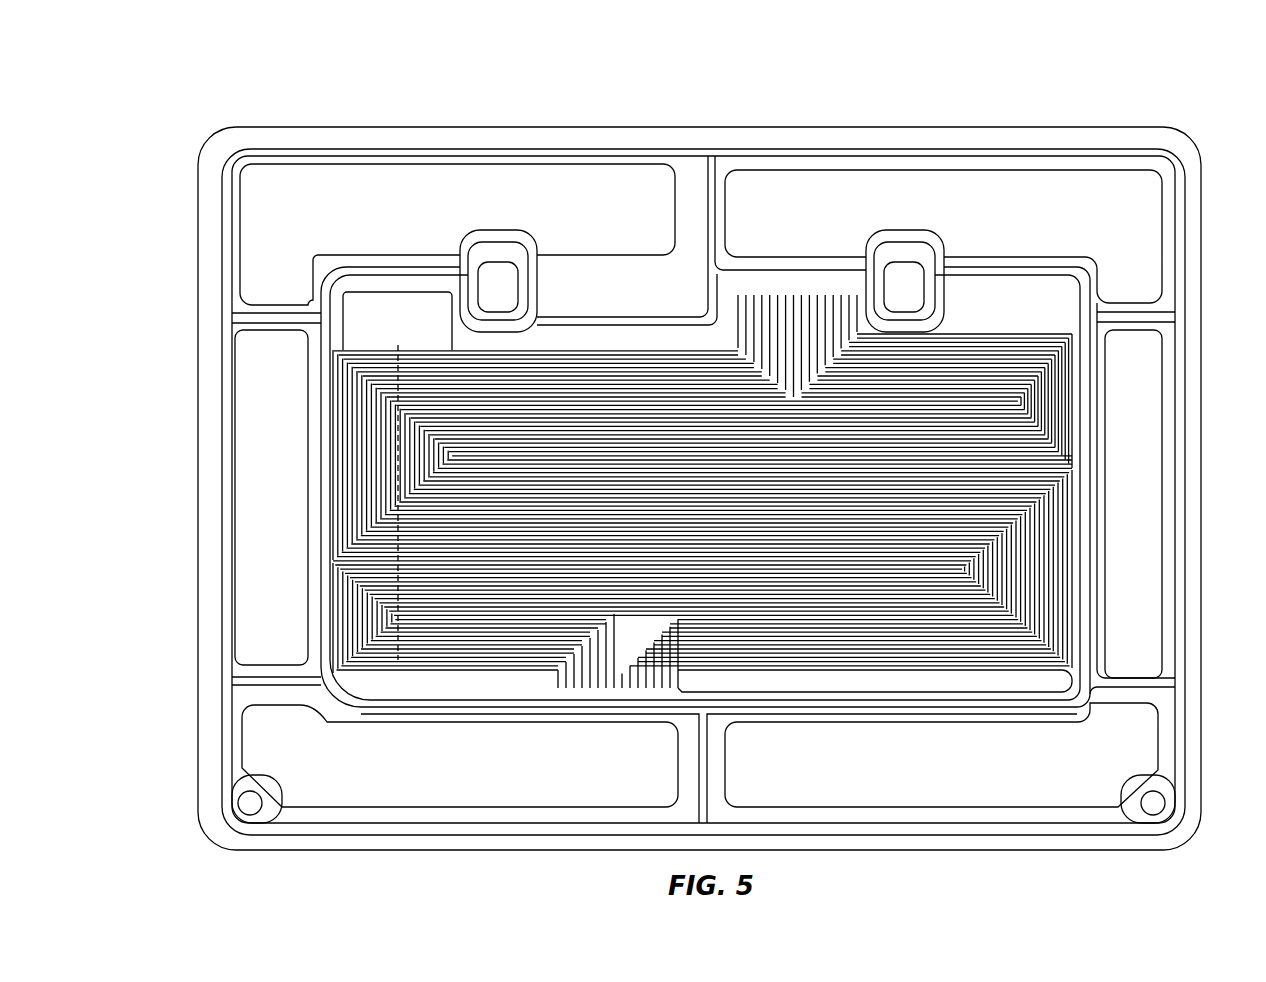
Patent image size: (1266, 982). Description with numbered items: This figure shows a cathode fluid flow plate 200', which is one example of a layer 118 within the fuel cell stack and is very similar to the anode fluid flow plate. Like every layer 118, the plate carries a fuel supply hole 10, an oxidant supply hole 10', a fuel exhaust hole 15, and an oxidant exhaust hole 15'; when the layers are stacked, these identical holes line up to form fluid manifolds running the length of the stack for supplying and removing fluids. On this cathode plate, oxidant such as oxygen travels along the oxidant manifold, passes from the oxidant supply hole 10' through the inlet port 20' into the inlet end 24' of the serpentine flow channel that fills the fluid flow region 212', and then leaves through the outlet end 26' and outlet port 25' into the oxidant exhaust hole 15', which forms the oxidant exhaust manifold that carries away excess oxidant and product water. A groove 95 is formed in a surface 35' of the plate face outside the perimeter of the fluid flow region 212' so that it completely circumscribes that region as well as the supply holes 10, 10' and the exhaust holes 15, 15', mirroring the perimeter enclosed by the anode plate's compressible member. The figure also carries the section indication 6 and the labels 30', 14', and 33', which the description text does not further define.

The cathode fluid flow plate 200' is at (687, 443).
The layer 118 is at (200, 147).
The groove 95 is at (1103, 146).
The fuel supply hole 10 is at (457, 234).
The oxidant supply hole 10' is at (943, 236).
The manifold lobe 30' is at (1129, 459).
The surface 35' is at (224, 499).
The oxidant exhaust hole 15' is at (460, 756).
The fuel exhaust hole 15 is at (941, 755).
The inlet end 24' is at (701, 240).
The inlet port 20' is at (766, 291).
The inlet channel section 14' is at (850, 295).
The fluid flow region 212' is at (694, 558).
The section line 6 is at (1228, 722).
The flow field corner 33' is at (317, 618).
The outlet port 25' is at (618, 707).
The outlet end 26' is at (875, 716).